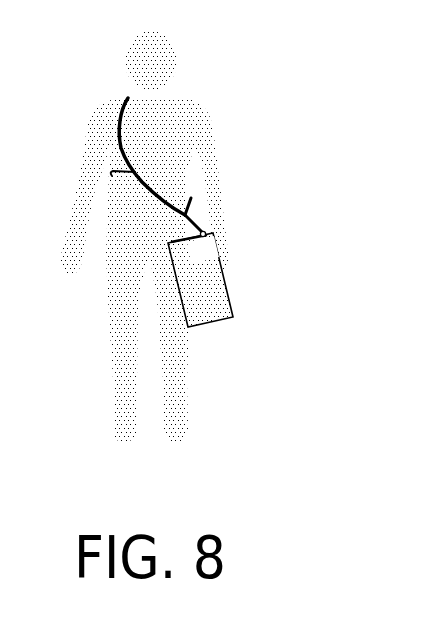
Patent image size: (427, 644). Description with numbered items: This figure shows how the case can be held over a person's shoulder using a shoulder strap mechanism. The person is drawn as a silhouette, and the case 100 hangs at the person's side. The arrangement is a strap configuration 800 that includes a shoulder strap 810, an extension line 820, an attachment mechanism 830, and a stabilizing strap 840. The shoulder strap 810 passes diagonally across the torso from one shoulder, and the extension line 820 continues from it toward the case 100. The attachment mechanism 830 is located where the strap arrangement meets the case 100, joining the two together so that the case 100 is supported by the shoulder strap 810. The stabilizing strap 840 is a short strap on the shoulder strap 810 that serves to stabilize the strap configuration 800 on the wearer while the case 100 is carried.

The strap configuration 800 is at (150, 236).
The shoulder strap 810 is at (92, 130).
The extension line 820 is at (110, 300).
The attachment mechanism 830 is at (222, 228).
The stabilizing strap 840 is at (108, 178).
The portable device bag 100 is at (230, 295).